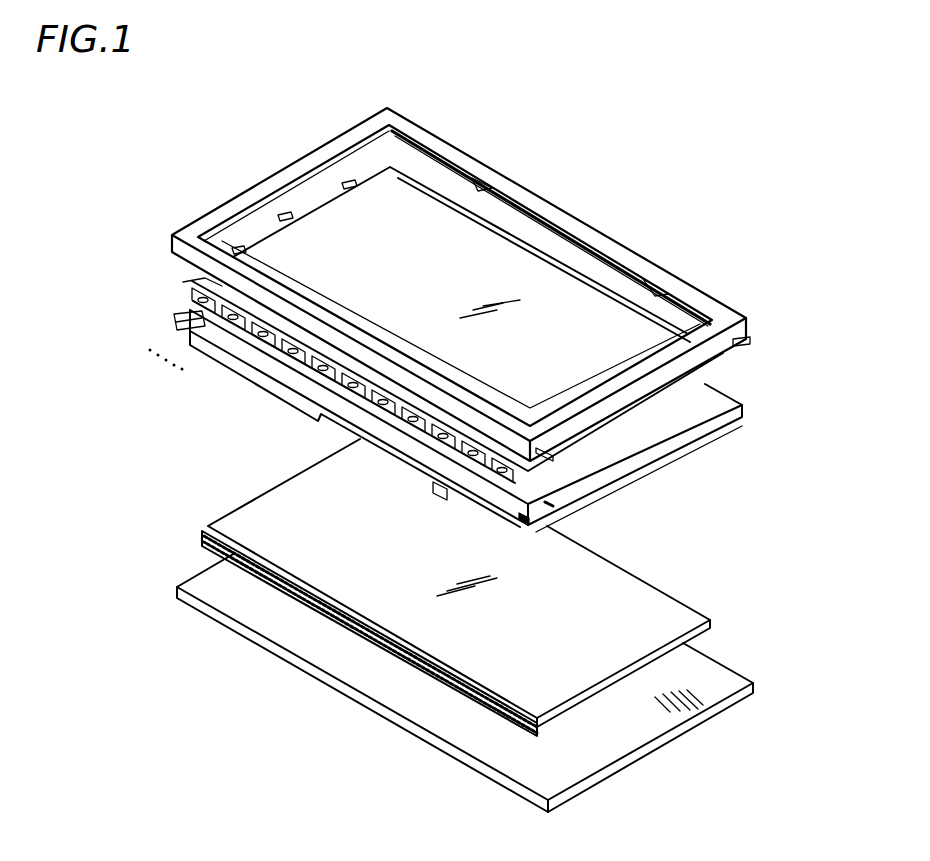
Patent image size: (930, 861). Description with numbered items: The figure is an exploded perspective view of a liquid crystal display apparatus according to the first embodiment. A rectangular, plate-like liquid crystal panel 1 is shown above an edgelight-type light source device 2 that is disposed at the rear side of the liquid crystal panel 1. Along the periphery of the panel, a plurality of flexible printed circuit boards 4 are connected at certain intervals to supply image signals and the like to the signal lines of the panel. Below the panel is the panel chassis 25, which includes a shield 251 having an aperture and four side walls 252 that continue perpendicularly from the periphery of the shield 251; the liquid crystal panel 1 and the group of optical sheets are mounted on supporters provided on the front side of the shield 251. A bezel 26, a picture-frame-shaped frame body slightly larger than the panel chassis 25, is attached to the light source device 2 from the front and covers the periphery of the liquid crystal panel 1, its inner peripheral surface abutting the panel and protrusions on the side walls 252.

The liquid crystal panel 1 is at (492, 252).
The light source device 2 is at (203, 500).
The flexible printed circuit boards 4 is at (187, 293).
The panel chassis 25 is at (492, 421).
The bezel 26 is at (733, 322).
The shield 251 is at (735, 403).
The side walls 252 is at (240, 370).